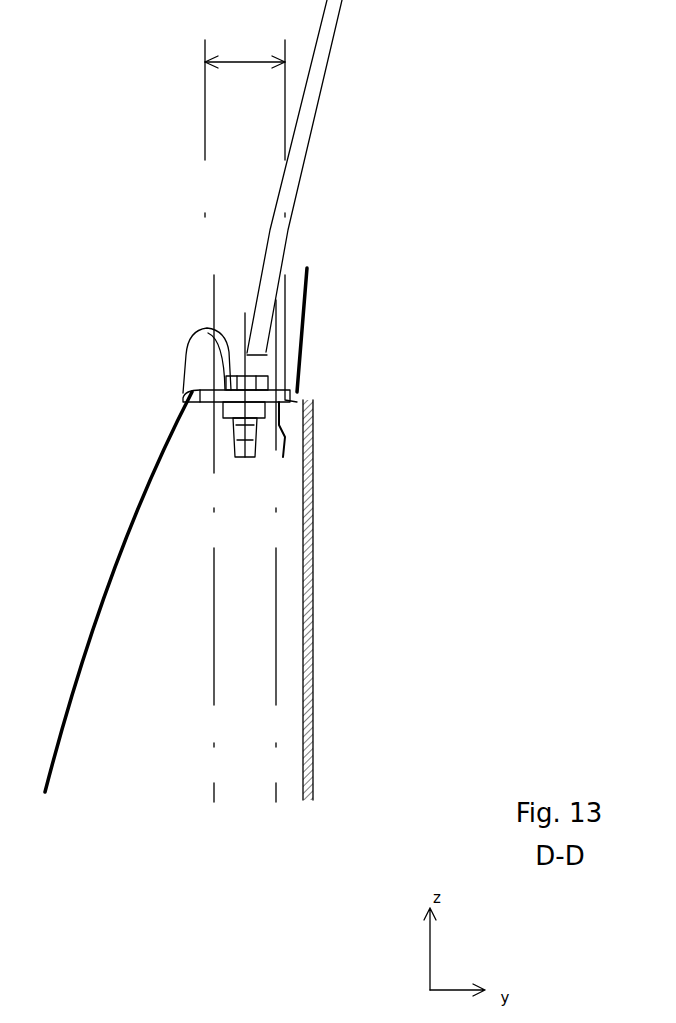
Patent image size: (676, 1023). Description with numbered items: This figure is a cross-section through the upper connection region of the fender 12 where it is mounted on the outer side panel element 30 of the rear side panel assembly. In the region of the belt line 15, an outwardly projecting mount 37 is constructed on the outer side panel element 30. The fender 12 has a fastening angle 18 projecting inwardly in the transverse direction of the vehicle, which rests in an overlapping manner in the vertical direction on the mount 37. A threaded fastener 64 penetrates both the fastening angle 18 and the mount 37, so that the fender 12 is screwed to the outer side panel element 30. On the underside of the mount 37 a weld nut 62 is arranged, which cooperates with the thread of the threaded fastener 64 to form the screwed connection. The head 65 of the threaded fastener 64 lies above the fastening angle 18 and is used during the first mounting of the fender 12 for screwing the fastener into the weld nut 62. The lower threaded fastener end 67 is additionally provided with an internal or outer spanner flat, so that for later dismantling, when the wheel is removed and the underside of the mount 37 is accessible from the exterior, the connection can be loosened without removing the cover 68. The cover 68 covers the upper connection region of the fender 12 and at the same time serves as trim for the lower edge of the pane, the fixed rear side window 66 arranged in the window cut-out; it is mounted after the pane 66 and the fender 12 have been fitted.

The fender 12 is at (100, 598).
The belt line 15 is at (398, 397).
The fastening angle 18 is at (195, 402).
The outer side panel element 30 is at (310, 595).
The mount 37 is at (296, 398).
The weld nut 62 is at (280, 445).
The threaded fastener 64 is at (231, 375).
The head 65 is at (210, 333).
The rear side window 66 is at (322, 100).
The lower threaded fastener end 67 is at (243, 453).
The cover 68 is at (196, 348).